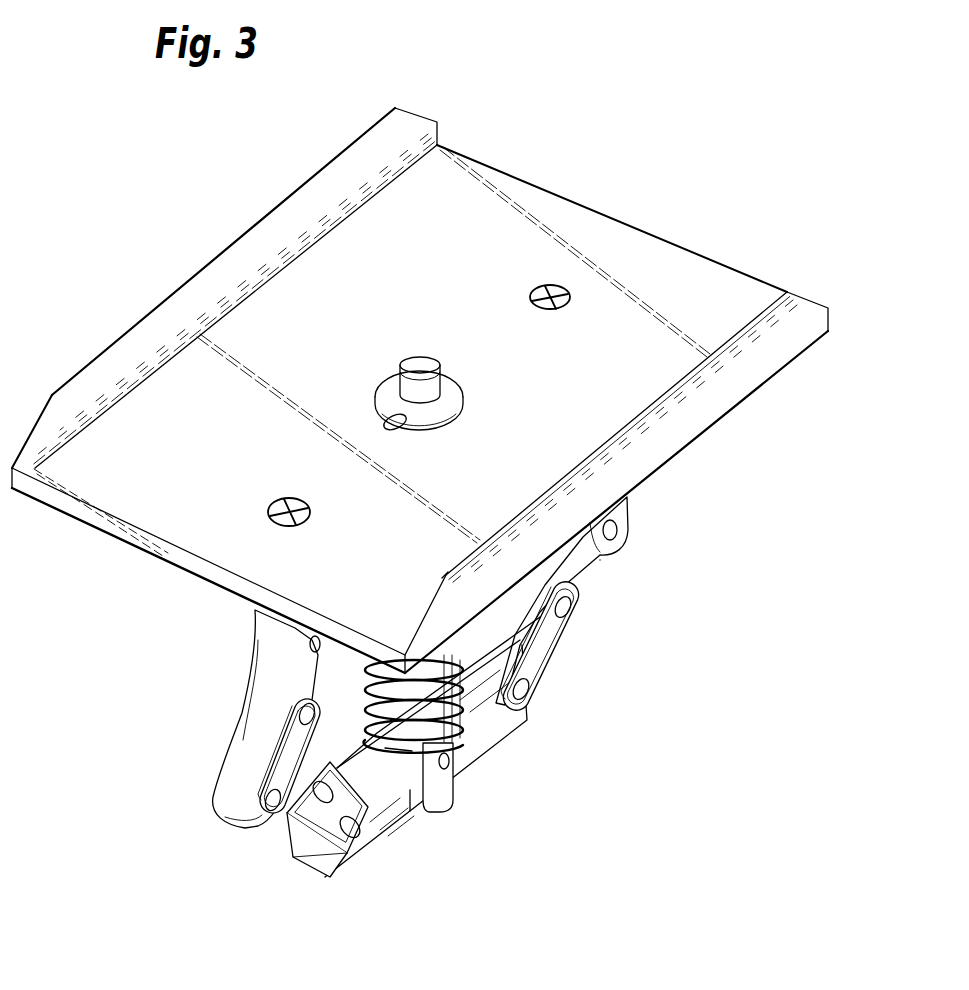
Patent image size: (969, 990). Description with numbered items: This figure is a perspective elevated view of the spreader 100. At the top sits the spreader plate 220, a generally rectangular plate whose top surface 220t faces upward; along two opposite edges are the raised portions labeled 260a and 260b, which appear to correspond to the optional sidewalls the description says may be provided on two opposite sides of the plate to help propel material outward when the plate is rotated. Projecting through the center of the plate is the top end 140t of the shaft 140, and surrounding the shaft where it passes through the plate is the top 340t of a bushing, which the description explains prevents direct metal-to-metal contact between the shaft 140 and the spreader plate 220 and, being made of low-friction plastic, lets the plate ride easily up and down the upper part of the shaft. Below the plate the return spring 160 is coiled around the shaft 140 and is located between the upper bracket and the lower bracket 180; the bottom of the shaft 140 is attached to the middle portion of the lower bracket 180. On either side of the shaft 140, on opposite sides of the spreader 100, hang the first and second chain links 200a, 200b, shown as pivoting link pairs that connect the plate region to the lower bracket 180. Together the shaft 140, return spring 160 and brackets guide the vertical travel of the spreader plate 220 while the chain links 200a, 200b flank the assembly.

The spreader 100 is at (769, 741).
The spreader plate 220 is at (528, 183).
The top surface 220t is at (415, 297).
The right guide rail 260a is at (697, 408).
The left guide rail 260b is at (245, 232).
The top end of shaft 140t is at (441, 379).
The top of bushing (knob base) 340t is at (443, 422).
The shaft 140 is at (428, 672).
The return spring 160 is at (423, 808).
The lower bracket 180 is at (388, 820).
The first chain link 200a is at (583, 578).
The second chain link 200b is at (235, 808).